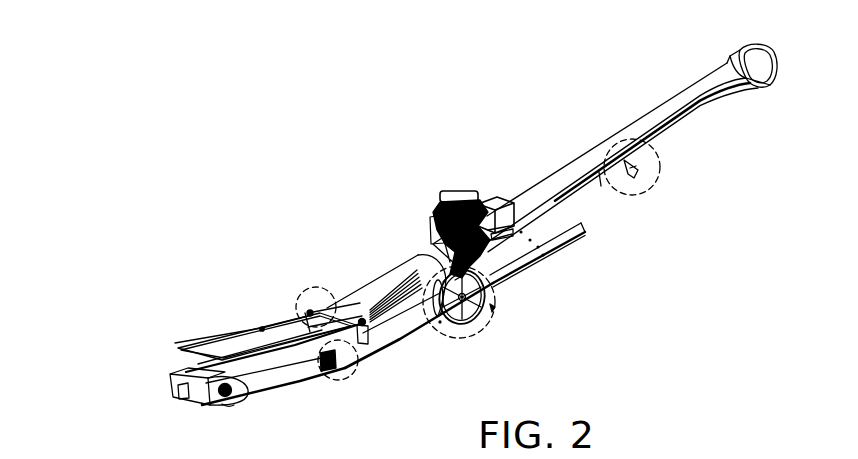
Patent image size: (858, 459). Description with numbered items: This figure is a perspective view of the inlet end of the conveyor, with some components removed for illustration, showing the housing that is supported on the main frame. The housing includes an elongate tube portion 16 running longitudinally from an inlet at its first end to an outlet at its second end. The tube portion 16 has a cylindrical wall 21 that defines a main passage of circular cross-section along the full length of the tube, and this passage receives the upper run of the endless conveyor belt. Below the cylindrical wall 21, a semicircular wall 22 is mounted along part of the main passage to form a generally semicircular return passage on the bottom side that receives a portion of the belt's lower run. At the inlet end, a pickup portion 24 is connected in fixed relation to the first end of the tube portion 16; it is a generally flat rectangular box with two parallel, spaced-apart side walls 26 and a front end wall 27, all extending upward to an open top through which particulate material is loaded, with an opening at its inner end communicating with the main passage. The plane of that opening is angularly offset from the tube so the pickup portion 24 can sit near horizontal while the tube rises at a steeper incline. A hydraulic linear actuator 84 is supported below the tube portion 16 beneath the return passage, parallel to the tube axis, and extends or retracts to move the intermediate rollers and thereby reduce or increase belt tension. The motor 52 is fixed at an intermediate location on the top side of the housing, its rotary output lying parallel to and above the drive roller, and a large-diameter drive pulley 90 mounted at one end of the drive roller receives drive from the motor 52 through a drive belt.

The tube portion 16 is at (645, 104).
The cylindrical wall 21 is at (684, 95).
The semicircular wall 22 is at (712, 112).
The hydraulic linear actuator 84 is at (594, 200).
The motor 52 is at (441, 216).
The drive pulley 90 is at (473, 323).
The pickup portion 24 is at (262, 414).
The side walls 26 is at (190, 369).
The front end wall 27 is at (170, 389).